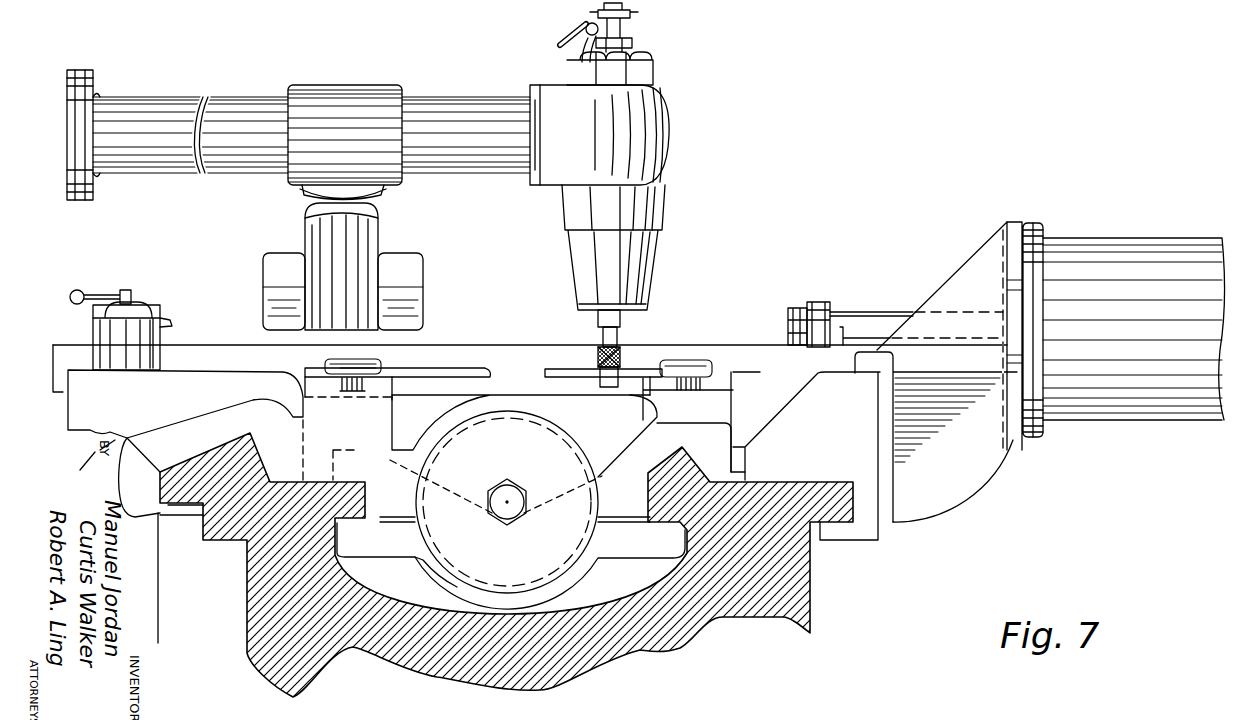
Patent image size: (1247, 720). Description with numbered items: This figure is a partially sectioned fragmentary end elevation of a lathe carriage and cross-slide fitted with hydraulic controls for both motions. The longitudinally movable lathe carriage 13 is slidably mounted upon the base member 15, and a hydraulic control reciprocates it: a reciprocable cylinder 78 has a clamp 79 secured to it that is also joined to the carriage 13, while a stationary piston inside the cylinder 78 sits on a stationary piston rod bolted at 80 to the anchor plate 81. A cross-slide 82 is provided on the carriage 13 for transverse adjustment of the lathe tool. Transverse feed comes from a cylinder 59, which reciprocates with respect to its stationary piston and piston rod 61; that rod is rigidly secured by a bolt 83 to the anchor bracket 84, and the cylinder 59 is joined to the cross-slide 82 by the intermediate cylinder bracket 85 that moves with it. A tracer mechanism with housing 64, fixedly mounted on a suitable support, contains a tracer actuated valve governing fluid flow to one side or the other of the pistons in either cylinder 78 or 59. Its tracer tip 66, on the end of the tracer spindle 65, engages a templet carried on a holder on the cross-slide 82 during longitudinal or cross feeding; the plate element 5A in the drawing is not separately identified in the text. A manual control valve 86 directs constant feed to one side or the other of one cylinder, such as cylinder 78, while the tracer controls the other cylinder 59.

The work table plate 5A is at (556, 376).
The lathe carriage 13 is at (165, 430).
The base member 15 is at (270, 614).
The cylinder 59 is at (1120, 246).
The piston rod 61 is at (890, 318).
The tracer housing 64 is at (647, 212).
The tracer spindle 65 is at (620, 333).
The tracer tip 66 is at (625, 370).
The reciprocable cylinder 78 is at (457, 552).
The clamp 79 is at (572, 572).
The bolt 80 is at (518, 511).
The anchor plate 81 is at (612, 450).
The cross-slide 82 is at (745, 355).
The bolt 83 is at (790, 308).
The anchor bracket 84 is at (822, 305).
The intermediate cylinder bracket 85 is at (958, 488).
The manual control valve 86 is at (160, 322).